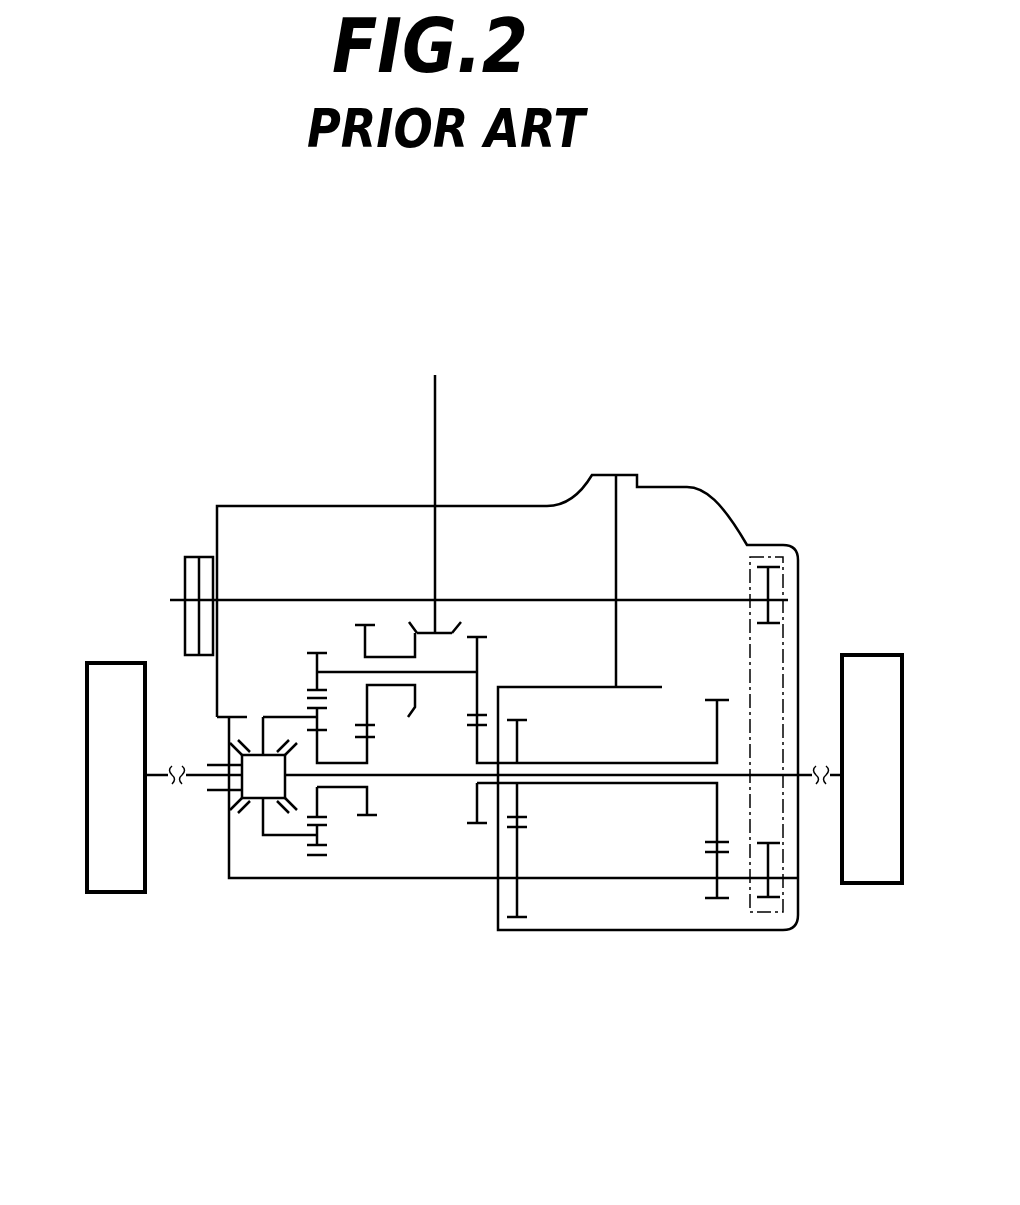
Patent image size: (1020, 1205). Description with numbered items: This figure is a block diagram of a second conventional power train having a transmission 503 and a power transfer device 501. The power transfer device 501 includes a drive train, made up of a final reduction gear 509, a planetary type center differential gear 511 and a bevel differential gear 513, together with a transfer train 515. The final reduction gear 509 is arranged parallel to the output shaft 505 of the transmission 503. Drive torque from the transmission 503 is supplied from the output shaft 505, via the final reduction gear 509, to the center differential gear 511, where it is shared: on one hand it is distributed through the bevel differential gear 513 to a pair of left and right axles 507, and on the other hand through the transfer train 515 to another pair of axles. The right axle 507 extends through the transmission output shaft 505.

The power transfer device 501 is at (420, 890).
The transmission 503 is at (594, 936).
The output shaft 505 is at (575, 780).
The axles 507 is at (193, 782).
The final reduction gear 509 is at (303, 667).
The center differential gear 511 is at (322, 865).
The bevel differential gear 513 is at (262, 843).
The transfer train 515 is at (412, 583).